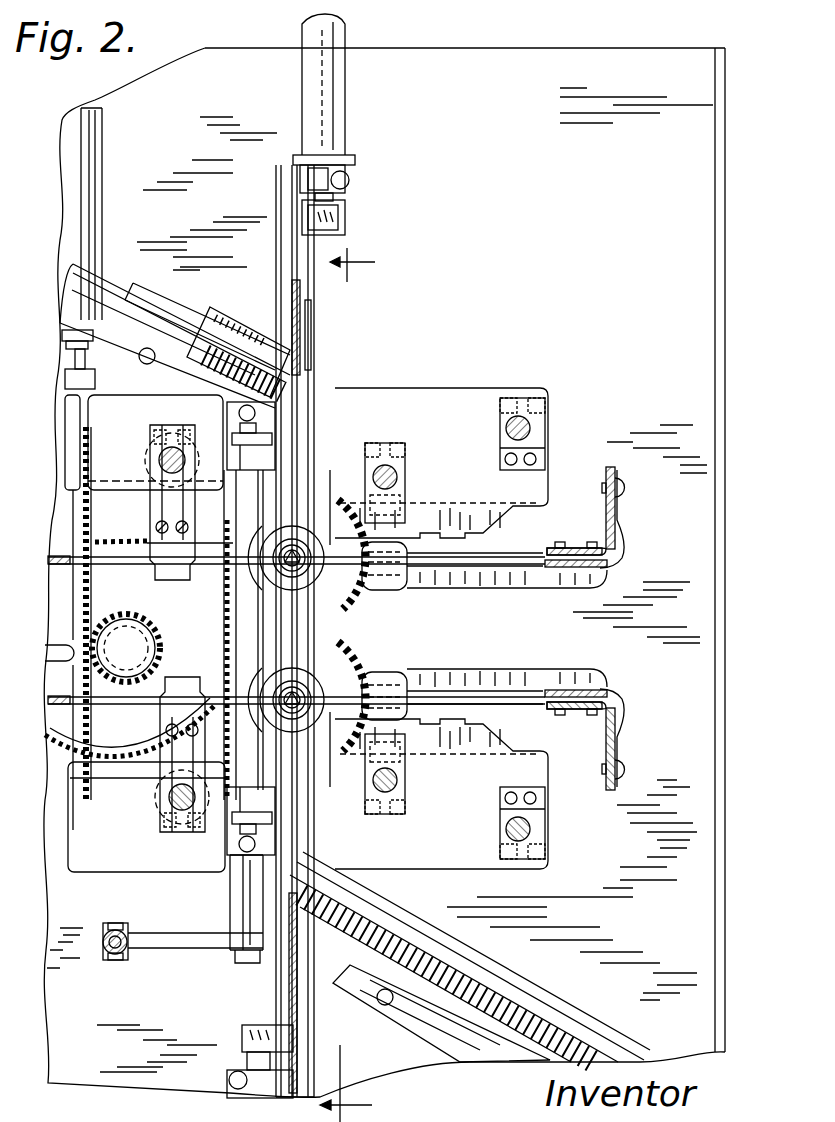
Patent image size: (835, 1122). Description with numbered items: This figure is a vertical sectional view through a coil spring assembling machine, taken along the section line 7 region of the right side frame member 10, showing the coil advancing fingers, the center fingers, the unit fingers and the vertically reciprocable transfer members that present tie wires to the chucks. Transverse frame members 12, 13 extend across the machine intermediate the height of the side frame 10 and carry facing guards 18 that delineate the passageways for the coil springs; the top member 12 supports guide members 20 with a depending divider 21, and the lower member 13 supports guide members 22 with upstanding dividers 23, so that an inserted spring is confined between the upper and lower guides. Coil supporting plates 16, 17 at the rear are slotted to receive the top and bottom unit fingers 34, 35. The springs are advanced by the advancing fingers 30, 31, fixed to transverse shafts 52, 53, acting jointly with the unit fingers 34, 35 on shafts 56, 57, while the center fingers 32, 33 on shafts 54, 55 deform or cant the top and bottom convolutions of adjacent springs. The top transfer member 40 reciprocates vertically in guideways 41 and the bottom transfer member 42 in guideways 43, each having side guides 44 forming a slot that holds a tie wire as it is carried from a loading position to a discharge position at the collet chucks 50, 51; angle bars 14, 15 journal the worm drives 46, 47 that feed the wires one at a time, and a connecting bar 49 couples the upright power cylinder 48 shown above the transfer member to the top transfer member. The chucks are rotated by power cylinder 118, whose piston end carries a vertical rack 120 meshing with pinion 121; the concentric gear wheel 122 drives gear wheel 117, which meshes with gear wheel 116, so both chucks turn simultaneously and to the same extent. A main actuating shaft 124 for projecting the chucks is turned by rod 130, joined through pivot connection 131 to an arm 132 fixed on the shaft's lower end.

The section line 7 is at (358, 685).
The side frame member 10 is at (712, 330).
The transverse frame member 12 is at (605, 535).
The transverse frame member 13 is at (605, 735).
The angle bar 14 is at (165, 378).
The angle bar 15 is at (365, 990).
The coil supporting plate 16 is at (164, 523).
The coil supporting plate 17 is at (130, 731).
The facing guard 18 is at (624, 545).
The guide member 20 is at (525, 575).
The depending divider 21 is at (480, 585).
The guide member 22 is at (543, 683).
The upstanding divider 23 is at (490, 683).
The advancing finger 30 is at (430, 487).
The advancing finger 31 is at (490, 772).
The center finger 32 is at (400, 590).
The center finger 33 is at (398, 672).
The unit finger 34 is at (161, 613).
The unit finger 35 is at (162, 668).
The top transfer member 40 is at (302, 320).
The guideway 41 is at (301, 386).
The bottom transfer member 42 is at (292, 981).
The guideway 43 is at (290, 845).
The side guide 44 is at (306, 355).
The worm drive 46 is at (272, 385).
The worm drive 47 is at (505, 1000).
The column 48 is at (300, 113).
The connecting bar 49 is at (345, 218).
The collet chuck 50 is at (345, 588).
The collet chuck 51 is at (300, 688).
The transverse shaft 52 is at (530, 425).
The transverse shaft 53 is at (540, 828).
The transverse shaft 54 is at (398, 470).
The transverse shaft 55 is at (412, 795).
The transverse shaft 56 is at (160, 462).
The transverse shaft 57 is at (170, 808).
The driving gear 116 is at (330, 480).
The driving gear 117 is at (340, 792).
The power cylinder 118 is at (100, 150).
The rack 120 is at (72, 505).
The pinion 121 is at (116, 610).
The gear wheel 122 is at (57, 740).
The main actuating shaft 124 is at (245, 475).
The rod 130 is at (105, 958).
The pivot connection 131 is at (117, 922).
The arm 132 is at (172, 948).